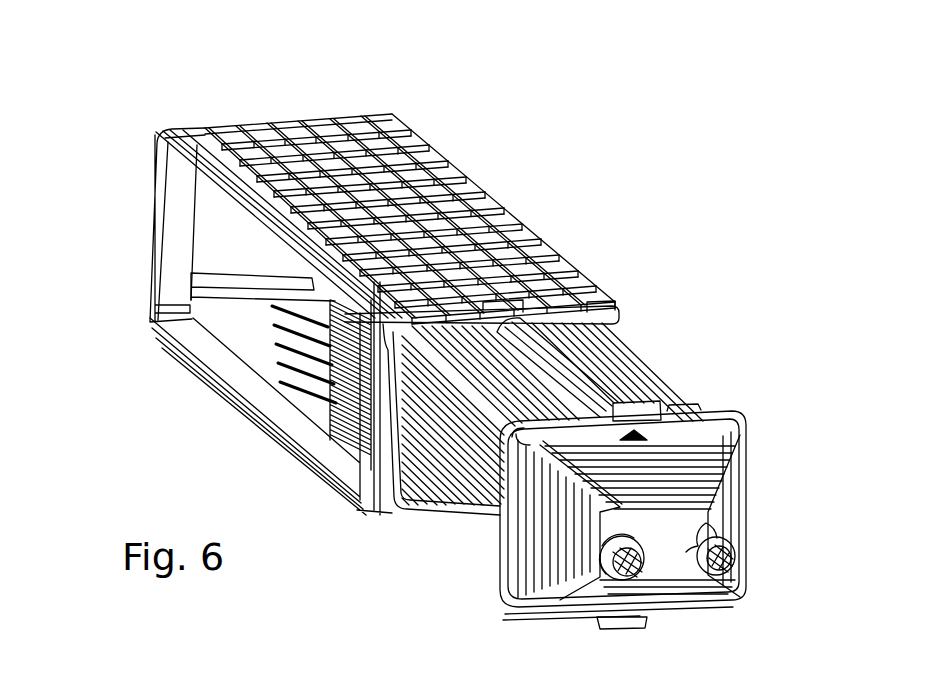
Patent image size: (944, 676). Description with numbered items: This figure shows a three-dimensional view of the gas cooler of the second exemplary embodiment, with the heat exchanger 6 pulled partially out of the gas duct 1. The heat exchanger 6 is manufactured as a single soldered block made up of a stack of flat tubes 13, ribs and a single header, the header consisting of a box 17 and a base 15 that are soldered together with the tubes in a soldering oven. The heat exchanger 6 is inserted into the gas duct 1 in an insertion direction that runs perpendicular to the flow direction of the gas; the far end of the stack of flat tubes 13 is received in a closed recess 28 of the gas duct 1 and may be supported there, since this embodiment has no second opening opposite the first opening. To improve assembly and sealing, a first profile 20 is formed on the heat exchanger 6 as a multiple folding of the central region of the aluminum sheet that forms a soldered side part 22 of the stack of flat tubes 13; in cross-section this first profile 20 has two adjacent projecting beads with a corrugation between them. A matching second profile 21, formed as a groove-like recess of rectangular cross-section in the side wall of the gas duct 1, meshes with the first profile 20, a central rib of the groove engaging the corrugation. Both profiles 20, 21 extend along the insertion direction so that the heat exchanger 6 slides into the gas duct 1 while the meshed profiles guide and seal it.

The gas duct 1 is at (437, 200).
The heat exchanger 6 is at (458, 582).
The flat tubes 13 is at (462, 437).
The base 15 is at (690, 402).
The box 17 is at (703, 477).
The first profile 20 is at (560, 363).
The second profile 21 is at (527, 303).
The side part 22 is at (617, 376).
The closed recess 28 is at (227, 237).